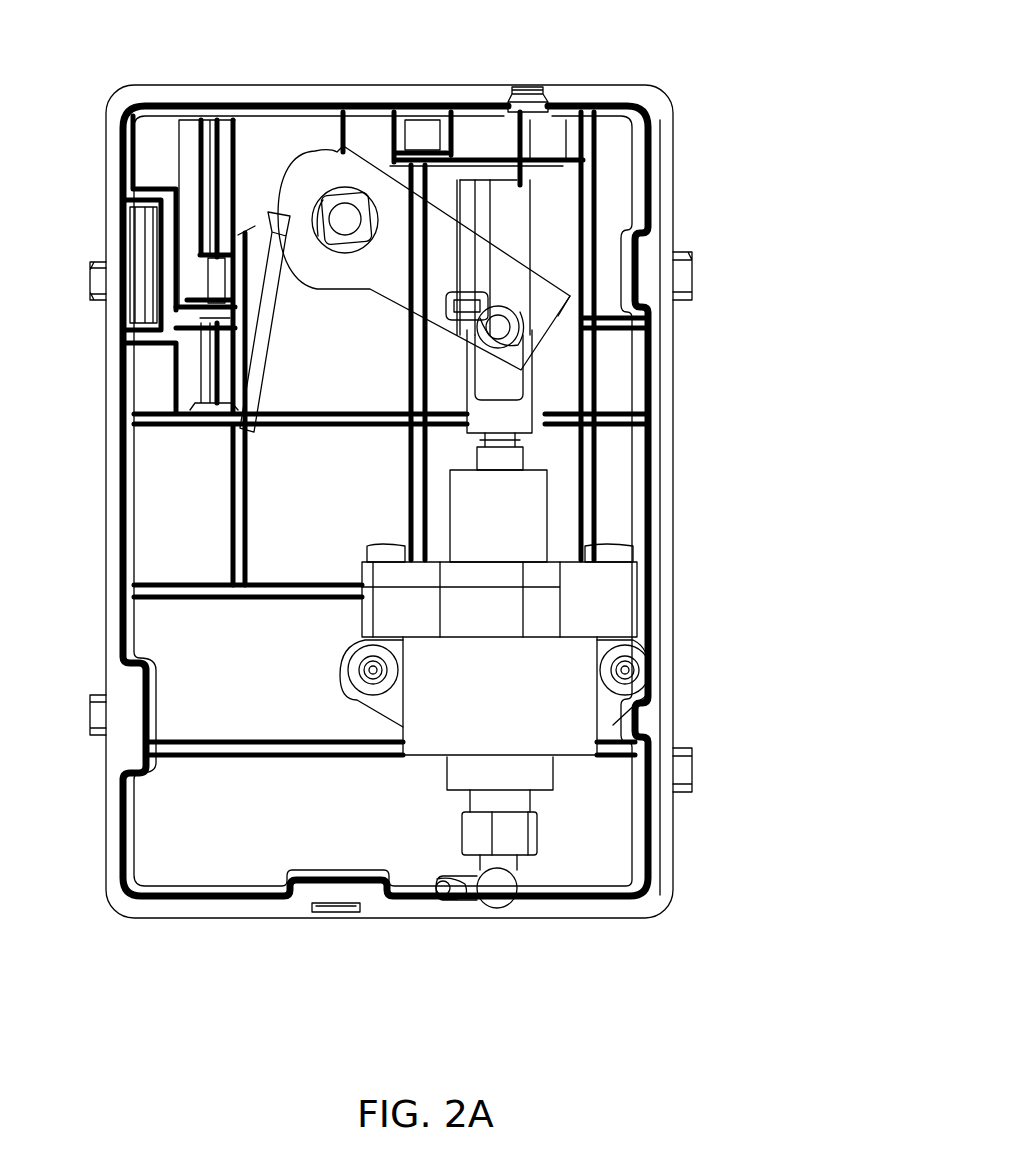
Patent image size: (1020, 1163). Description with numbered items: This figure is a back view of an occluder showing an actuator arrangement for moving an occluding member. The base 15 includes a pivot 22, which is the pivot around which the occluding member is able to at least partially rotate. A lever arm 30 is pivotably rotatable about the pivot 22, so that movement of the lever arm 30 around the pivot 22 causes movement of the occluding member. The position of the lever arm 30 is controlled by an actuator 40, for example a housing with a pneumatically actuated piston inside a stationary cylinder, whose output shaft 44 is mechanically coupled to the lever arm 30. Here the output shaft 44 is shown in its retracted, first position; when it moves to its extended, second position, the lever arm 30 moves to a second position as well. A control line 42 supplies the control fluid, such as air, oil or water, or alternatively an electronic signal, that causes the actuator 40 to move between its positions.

The base 15 is at (624, 85).
The pivot 22 is at (347, 220).
The lever arm 30 is at (427, 260).
The actuator 40 is at (500, 655).
The control line 42 is at (462, 888).
The output shaft 44 is at (500, 418).